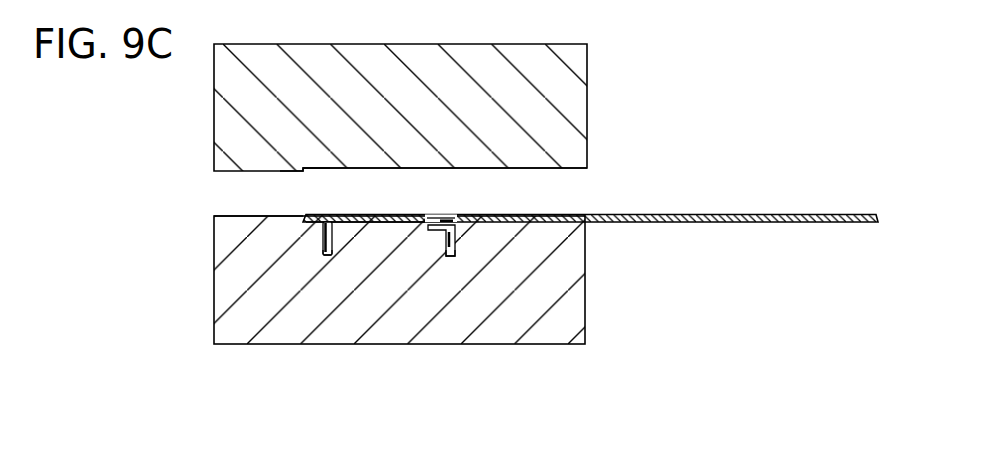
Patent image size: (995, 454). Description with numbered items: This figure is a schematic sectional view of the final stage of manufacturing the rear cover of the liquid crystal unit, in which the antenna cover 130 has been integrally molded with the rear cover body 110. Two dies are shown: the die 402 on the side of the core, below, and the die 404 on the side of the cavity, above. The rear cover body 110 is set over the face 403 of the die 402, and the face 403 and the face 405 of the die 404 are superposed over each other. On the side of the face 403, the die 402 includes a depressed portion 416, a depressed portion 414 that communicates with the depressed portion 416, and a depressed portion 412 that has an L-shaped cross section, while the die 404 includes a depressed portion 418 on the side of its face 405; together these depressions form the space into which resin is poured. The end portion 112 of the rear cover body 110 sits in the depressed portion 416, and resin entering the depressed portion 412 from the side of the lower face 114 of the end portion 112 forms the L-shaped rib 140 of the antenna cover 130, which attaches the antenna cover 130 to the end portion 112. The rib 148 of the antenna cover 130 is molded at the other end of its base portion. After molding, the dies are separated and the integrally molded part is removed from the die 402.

The die 404 is at (578, 102).
The die 402 is at (578, 297).
The face 403 is at (228, 216).
The face 405 is at (289, 171).
The depressed portion 418 is at (357, 178).
The rear cover body 110 is at (695, 224).
The depressed portion 416 is at (387, 223).
The lower face 114 is at (430, 213).
The end portion 112 is at (445, 214).
The antenna cover 130 is at (357, 213).
The rib 148 is at (328, 252).
The depressed portion 414 is at (323, 243).
The L-shaped rib 140 is at (438, 231).
The depressed portion 412 is at (455, 254).